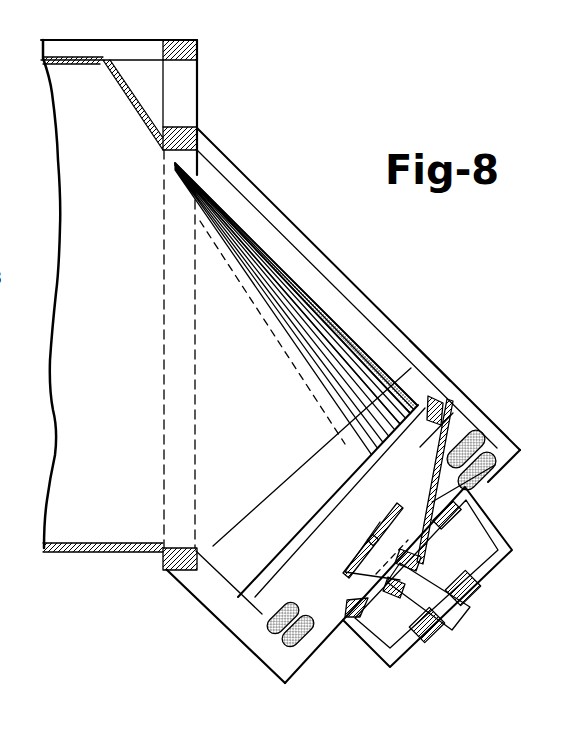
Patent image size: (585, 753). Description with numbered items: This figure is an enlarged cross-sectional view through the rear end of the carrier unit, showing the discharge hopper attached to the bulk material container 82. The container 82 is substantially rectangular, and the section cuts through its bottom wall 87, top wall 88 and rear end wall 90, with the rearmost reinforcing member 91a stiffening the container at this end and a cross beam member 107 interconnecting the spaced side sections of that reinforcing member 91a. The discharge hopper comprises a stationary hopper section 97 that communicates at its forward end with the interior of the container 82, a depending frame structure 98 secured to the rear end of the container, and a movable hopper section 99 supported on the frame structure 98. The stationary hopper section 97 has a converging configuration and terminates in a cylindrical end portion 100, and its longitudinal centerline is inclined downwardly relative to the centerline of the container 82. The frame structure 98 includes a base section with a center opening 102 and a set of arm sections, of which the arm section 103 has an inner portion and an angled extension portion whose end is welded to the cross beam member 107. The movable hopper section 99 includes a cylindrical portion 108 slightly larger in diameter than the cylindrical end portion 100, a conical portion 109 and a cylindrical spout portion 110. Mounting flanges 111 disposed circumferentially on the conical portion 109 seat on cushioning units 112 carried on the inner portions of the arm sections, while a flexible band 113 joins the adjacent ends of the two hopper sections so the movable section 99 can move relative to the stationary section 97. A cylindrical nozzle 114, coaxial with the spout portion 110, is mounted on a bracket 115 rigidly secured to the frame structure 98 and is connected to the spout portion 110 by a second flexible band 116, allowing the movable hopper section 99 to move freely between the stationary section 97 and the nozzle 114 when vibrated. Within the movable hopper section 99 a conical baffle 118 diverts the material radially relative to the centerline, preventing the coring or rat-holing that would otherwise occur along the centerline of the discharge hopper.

The bulk material container 82 is at (114, 334).
The bottom wall 87 is at (97, 552).
The top wall 88 is at (90, 64).
The rear end wall 90 is at (137, 101).
The rearmost reinforcing member 91a is at (198, 53).
The cross beam member 107 is at (198, 142).
The flexible band 113 is at (247, 597).
The stationary hopper section 97 is at (349, 310).
The depending frame structure 98 is at (428, 347).
The cylindrical end portion 100 is at (420, 384).
The arm section 103 is at (330, 260).
The cylindrical portion 108 is at (460, 403).
The mounting flanges 111 is at (478, 428).
The cushioning units 112 is at (500, 452).
The conical portion 109 is at (460, 497).
The movable hopper section 99 is at (450, 503).
The center opening 102 is at (440, 543).
The conical baffle 118 is at (381, 517).
The bracket 115 is at (483, 568).
The cylindrical spout portion 110 is at (390, 593).
The cylindrical nozzle 114 is at (457, 623).
The flexible band 116 is at (437, 567).